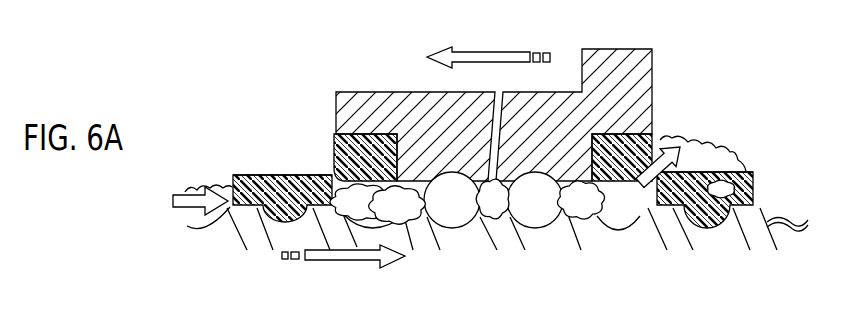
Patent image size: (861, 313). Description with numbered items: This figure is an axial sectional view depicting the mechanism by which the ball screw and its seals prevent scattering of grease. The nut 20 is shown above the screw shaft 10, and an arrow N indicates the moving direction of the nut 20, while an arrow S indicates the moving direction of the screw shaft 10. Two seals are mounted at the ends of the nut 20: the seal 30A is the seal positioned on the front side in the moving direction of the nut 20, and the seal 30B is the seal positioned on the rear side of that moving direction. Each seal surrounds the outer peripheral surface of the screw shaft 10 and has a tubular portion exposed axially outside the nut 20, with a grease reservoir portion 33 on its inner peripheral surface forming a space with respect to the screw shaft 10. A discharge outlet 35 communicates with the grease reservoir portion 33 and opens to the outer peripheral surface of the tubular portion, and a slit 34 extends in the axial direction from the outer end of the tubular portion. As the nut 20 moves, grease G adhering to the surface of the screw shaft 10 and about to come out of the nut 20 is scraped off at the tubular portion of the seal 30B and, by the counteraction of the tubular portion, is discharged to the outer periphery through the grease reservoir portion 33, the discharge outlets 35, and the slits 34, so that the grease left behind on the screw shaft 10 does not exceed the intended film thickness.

The screw shaft 10 is at (787, 220).
The nut 20 is at (642, 75).
The seal positioned on front side in moving direction of nut 30A is at (257, 175).
The seal positioned on rear side in moving direction of nut 30B is at (755, 178).
The grease reservoir portion 33 is at (333, 172).
The slit 34 is at (283, 172).
The discharge outlet 35 is at (325, 160).
The grease G is at (213, 187).
The moving direction of nut N is at (488, 41).
The moving direction of screw shaft S is at (343, 270).